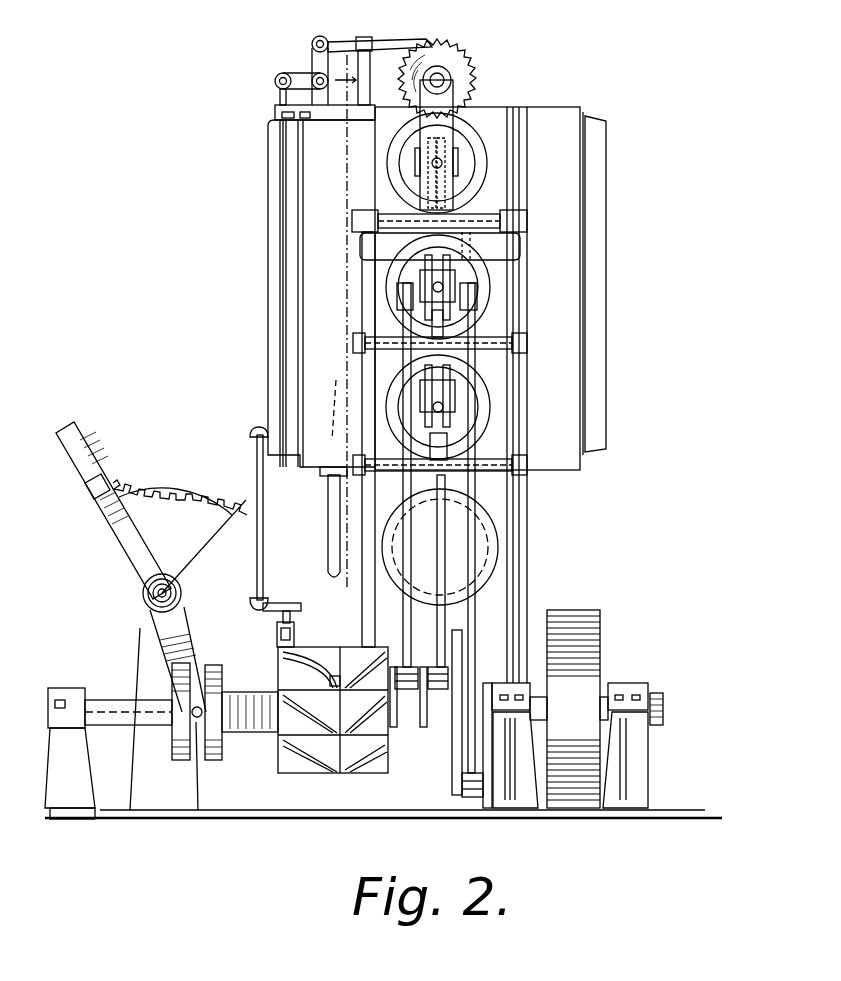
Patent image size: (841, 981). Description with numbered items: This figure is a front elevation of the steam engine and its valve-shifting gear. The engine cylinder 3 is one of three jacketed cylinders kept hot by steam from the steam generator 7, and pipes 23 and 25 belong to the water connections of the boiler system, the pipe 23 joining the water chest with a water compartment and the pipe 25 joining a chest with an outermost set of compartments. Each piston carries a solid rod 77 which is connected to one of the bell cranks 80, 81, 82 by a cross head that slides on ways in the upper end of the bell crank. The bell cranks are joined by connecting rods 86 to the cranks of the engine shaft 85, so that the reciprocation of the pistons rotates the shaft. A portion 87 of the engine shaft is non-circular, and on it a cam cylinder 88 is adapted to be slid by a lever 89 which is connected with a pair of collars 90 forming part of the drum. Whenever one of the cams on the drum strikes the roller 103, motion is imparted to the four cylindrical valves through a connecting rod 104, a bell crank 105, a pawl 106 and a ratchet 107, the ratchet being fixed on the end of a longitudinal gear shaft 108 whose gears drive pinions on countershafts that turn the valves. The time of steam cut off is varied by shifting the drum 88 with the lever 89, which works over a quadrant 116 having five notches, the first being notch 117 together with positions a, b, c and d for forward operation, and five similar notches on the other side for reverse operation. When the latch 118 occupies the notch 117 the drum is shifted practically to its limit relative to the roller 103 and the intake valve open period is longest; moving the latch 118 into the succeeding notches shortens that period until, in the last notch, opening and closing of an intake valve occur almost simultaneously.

The cylinder 3 is at (345, 322).
The steam generator 7 is at (486, 560).
The pipe 23 is at (256, 553).
The pipe 25 is at (331, 582).
The piston rod 77 is at (443, 165).
The bell crank 80 is at (462, 222).
The bell crank 81 is at (437, 325).
The bell crank 82 is at (430, 425).
The engine shaft 85 is at (664, 700).
The connecting rod 86 is at (442, 558).
The non-circular portion of engine shaft 87 is at (244, 692).
The cam cylinder 88 is at (282, 760).
The lever 89 is at (180, 604).
The collars 90 is at (178, 740).
The roller 103 is at (277, 636).
The connecting rod 104 is at (282, 176).
The bell crank 105 is at (312, 56).
The pawl 106 is at (394, 44).
The ratchet 107 is at (470, 88).
The gear shaft 108 is at (447, 73).
The quadrant 116 is at (205, 506).
The notch 117 is at (178, 481).
The latch 118 is at (70, 425).